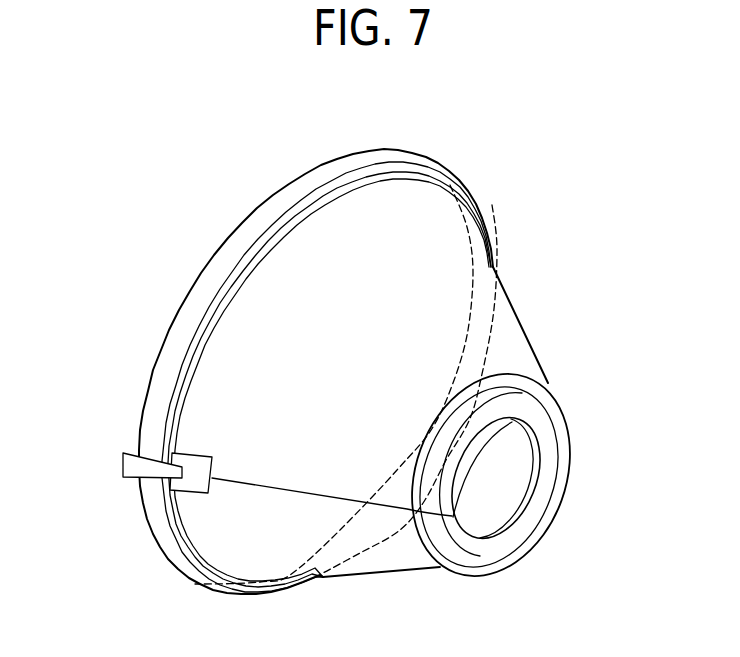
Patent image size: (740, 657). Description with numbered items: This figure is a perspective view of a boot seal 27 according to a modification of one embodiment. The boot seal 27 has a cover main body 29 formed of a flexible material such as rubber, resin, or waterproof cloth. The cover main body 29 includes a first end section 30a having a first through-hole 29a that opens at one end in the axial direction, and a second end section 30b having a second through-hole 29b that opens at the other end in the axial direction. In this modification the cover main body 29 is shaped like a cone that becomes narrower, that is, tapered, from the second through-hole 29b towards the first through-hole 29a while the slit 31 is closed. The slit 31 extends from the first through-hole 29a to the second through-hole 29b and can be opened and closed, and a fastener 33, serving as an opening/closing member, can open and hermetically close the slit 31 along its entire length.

The boot seal 27 is at (356, 361).
The cover main body 29 is at (518, 320).
The first through-hole 29a is at (497, 507).
The second through-hole 29b is at (477, 333).
The first end section 30a is at (556, 390).
The second end section 30b is at (212, 276).
The slit 31 is at (342, 490).
The fastener 33 is at (195, 493).